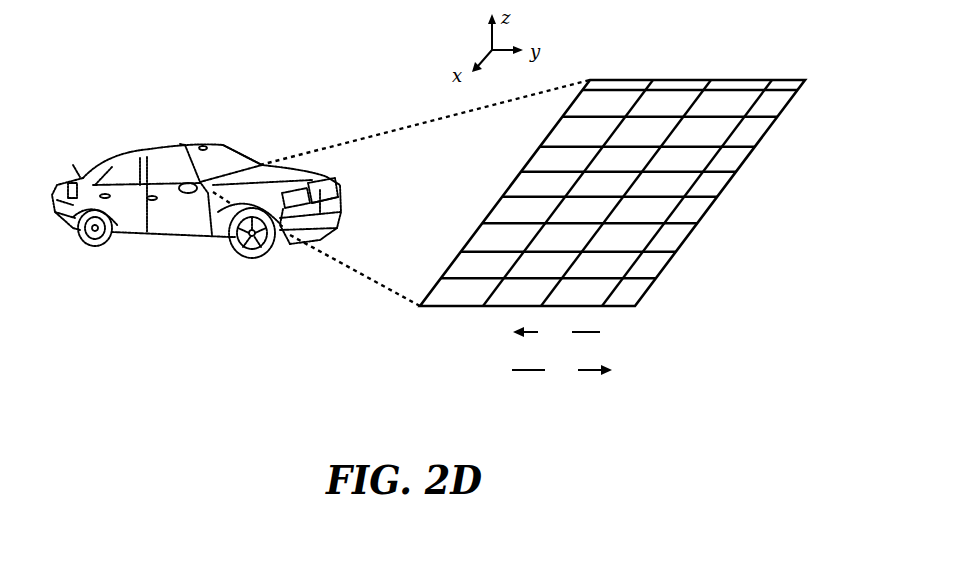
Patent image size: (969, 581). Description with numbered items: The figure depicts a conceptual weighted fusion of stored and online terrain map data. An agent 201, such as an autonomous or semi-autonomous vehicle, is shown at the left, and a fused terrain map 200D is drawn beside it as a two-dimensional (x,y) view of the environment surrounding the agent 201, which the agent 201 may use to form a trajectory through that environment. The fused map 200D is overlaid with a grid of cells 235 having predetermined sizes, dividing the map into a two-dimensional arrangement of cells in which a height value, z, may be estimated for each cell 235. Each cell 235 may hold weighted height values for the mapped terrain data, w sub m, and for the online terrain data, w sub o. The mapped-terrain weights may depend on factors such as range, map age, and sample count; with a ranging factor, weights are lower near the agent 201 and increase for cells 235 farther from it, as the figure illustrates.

The agent 201 is at (196, 199).
The fused terrain map 200D is at (692, 78).
The cells 235 is at (447, 353).